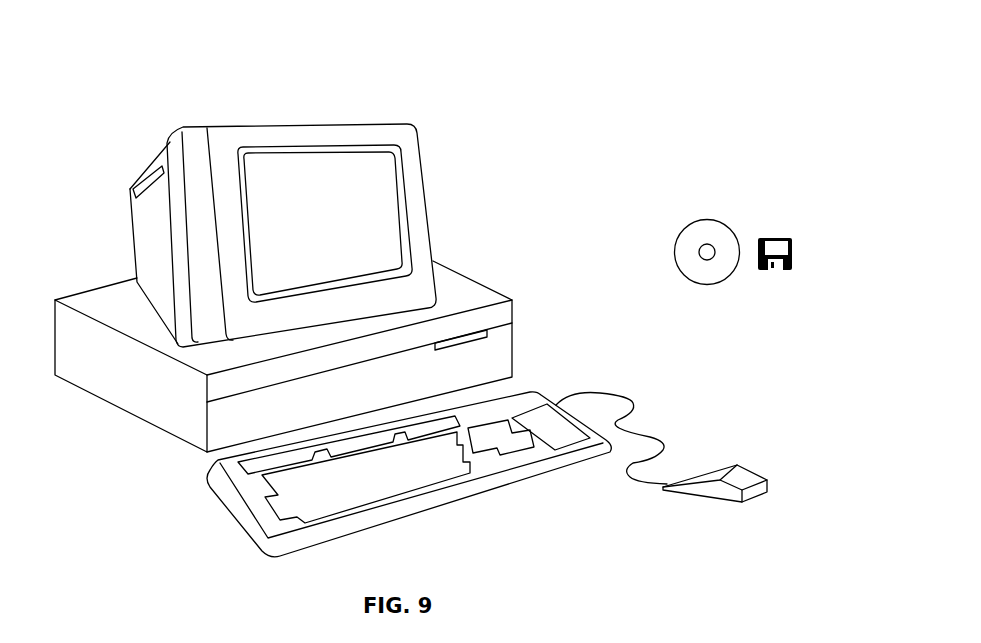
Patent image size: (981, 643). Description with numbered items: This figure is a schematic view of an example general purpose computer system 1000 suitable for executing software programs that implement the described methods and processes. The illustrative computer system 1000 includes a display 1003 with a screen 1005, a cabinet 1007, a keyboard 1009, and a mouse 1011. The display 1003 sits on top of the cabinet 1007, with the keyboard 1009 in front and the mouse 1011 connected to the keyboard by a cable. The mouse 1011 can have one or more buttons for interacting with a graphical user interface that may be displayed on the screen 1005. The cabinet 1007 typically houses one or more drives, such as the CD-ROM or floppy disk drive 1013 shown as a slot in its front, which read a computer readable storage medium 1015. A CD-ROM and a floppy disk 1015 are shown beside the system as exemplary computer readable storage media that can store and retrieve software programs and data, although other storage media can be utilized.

The computer system 1000 is at (644, 150).
The display 1003 is at (430, 238).
The screen 1005 is at (395, 174).
The cabinet 1007 is at (172, 434).
The keyboard 1009 is at (413, 512).
The mouse 1011 is at (757, 470).
The CD-ROM or floppy disk drive 1013 is at (488, 333).
The computer readable storage medium 1015 is at (757, 201).